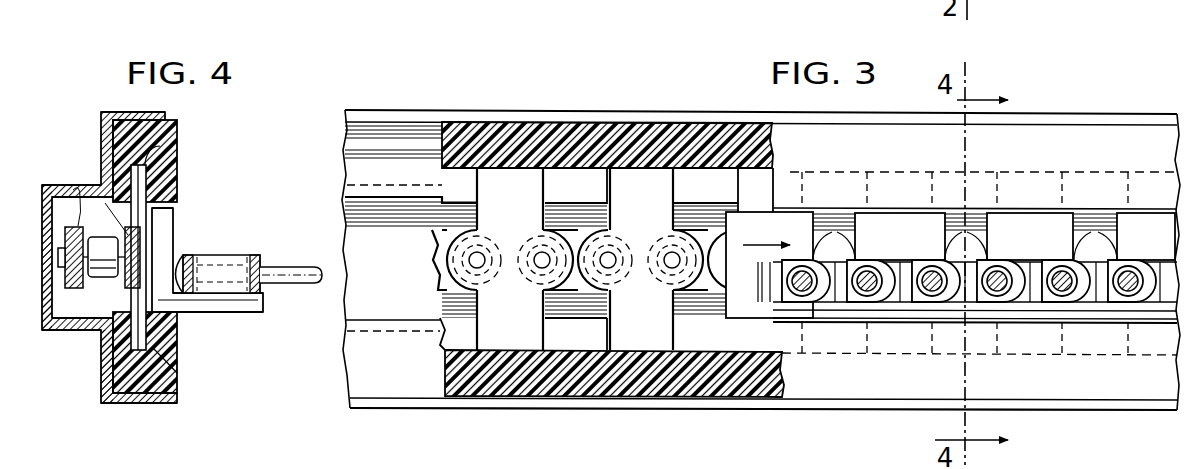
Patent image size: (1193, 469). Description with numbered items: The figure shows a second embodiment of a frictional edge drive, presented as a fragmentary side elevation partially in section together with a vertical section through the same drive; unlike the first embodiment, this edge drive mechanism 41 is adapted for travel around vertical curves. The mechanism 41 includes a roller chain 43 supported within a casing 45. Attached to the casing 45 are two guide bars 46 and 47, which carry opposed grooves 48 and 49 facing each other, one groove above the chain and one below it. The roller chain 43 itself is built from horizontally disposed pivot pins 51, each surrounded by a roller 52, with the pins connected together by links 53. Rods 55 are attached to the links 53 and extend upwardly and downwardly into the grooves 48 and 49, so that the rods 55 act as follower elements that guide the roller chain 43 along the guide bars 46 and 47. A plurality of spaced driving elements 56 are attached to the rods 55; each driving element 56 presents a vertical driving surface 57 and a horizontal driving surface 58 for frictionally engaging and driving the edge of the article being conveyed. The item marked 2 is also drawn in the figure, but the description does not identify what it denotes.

In FIG. 4, the terminal 2 is at (242, 250).
In FIG. 3, the terminal 2 is at (820, 313).
In FIG. 4, the edge drive mechanism 41 is at (93, 364).
In FIG. 3, the edge drive mechanism 41 is at (515, 106).
In FIG. 4, the roller chain 43 is at (62, 223).
In FIG. 3, the roller chain 43 is at (428, 274).
In FIG. 4, the casing 45 is at (101, 115).
In FIG. 3, the casing 45 is at (370, 157).
In FIG. 4, the guide bar 46 is at (168, 126).
In FIG. 3, the guide bar 46 is at (598, 133).
In FIG. 4, the guide bar 47 is at (173, 397).
In FIG. 3, the guide bar 47 is at (540, 386).
In FIG. 4, the groove 48 is at (165, 147).
In FIG. 3, the groove 48 is at (591, 170).
In FIG. 4, the groove 49 is at (177, 373).
In FIG. 3, the groove 49 is at (445, 338).
In FIG. 4, the pivot pin 51 is at (58, 253).
In FIG. 3, the pivot pin 51 is at (542, 262).
In FIG. 4, the roller 52 is at (88, 260).
In FIG. 3, the roller 52 is at (538, 232).
In FIG. 4, the link 53 is at (80, 190).
In FIG. 4, the rod 55 is at (160, 178).
In FIG. 3, the rod 55 is at (527, 336).
In FIG. 4, the driving element 56 is at (246, 318).
In FIG. 3, the driving element 56 is at (850, 210).
In FIG. 4, the vertical driving surface 57 is at (175, 227).
In FIG. 3, the vertical driving surface 57 is at (900, 223).
In FIG. 4, the horizontal driving surface 58 is at (253, 290).
In FIG. 3, the horizontal driving surface 58 is at (889, 313).